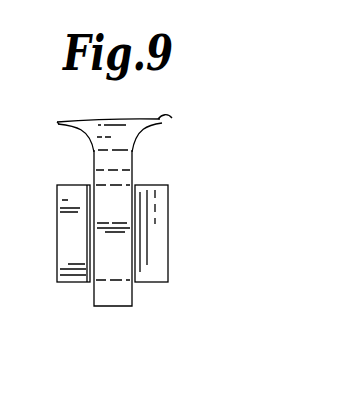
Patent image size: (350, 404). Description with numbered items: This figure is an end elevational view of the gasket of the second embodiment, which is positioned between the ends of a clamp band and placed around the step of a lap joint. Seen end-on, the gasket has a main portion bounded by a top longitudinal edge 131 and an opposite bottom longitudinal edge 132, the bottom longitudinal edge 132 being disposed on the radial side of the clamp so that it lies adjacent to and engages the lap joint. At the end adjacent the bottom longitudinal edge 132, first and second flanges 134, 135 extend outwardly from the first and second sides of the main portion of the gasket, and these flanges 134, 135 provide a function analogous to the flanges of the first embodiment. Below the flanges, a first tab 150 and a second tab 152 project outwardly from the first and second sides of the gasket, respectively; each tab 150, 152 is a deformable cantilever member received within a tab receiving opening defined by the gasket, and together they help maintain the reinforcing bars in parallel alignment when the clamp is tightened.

The top longitudinal edge 131 is at (112, 306).
The bottom longitudinal edge 132 is at (115, 121).
The first flange 134 is at (172, 118).
The second flange 135 is at (57, 122).
The first tab 150 is at (152, 232).
The second tab 152 is at (72, 220).